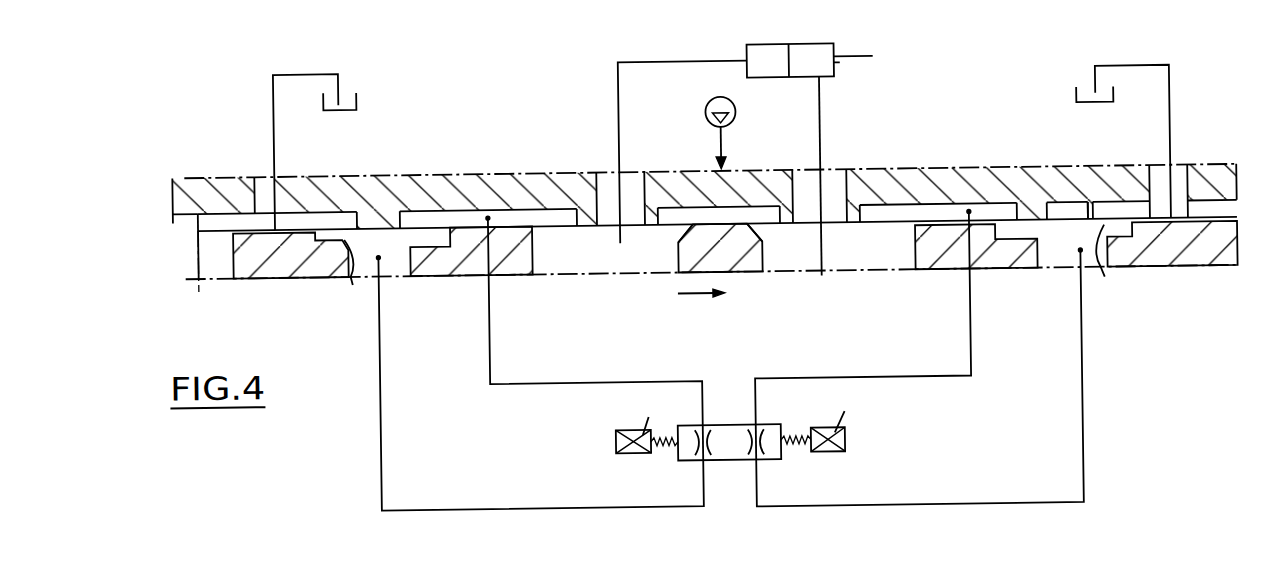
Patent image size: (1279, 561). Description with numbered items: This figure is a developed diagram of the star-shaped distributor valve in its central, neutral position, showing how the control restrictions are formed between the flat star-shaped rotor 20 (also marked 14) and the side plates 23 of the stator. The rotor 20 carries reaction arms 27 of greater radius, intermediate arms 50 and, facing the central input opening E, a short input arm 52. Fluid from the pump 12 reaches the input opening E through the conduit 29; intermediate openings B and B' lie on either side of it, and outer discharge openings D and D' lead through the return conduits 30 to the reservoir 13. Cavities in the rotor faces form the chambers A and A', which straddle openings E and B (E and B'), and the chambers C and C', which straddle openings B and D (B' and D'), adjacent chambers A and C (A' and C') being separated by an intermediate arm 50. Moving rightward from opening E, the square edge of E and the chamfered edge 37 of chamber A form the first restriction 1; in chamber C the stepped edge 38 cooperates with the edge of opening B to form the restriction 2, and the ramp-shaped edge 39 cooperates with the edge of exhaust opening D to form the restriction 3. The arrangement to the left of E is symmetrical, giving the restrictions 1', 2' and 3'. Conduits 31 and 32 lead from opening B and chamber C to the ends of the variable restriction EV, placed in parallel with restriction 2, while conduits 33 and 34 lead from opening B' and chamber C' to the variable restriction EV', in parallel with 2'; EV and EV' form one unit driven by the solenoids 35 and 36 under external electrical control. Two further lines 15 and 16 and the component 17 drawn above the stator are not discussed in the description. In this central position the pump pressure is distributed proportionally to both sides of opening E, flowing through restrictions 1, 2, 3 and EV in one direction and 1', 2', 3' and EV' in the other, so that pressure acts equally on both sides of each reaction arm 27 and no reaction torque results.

The side plates 23 is at (192, 191).
The star-shaped rotor 20 is at (680, 246).
The slide plate (alternative designation) 14 is at (193, 250).
The reaction arms 27 is at (262, 277).
The return conduits 30 is at (288, 182).
The restriction 3 is at (1085, 175).
The restriction 3' is at (353, 275).
The intermediate arm 50 is at (513, 262).
The restriction 2 is at (1011, 177).
The restriction 2' is at (437, 183).
The first restriction 1 is at (775, 233).
The first restriction 1' is at (665, 245).
The chamfered edge 37 is at (760, 236).
The short input arm 52 is at (740, 265).
The ramp-shaped edge 39 is at (1103, 282).
The conduit 29 is at (733, 183).
The stepped edge 38 is at (987, 214).
The reservoir 13 is at (722, 146).
The pressure source 12 is at (720, 122).
The conduit to cylinder 16 is at (683, 152).
The conduit to cylinder 15 is at (831, 175).
The hydraulic cylinder / actuator 17 is at (781, 79).
The conduit 33 is at (594, 320).
The conduit 34 is at (539, 380).
The conduit 31 is at (875, 316).
The conduit 32 is at (932, 377).
The solenoid 35 is at (827, 431).
The solenoid 36 is at (646, 431).
The variable internal restriction EV is at (763, 430).
The variable restriction EV' is at (729, 430).
The rotor chamber A is at (838, 254).
The rotor chamber A' is at (605, 256).
The intermediate opening B is at (938, 175).
The intermediate opening B' is at (495, 182).
The rotor chamber C is at (1065, 192).
The rotor chamber C' is at (485, 195).
The discharge opening D is at (1121, 168).
The discharge opening D' is at (284, 180).
The input opening E is at (680, 212).